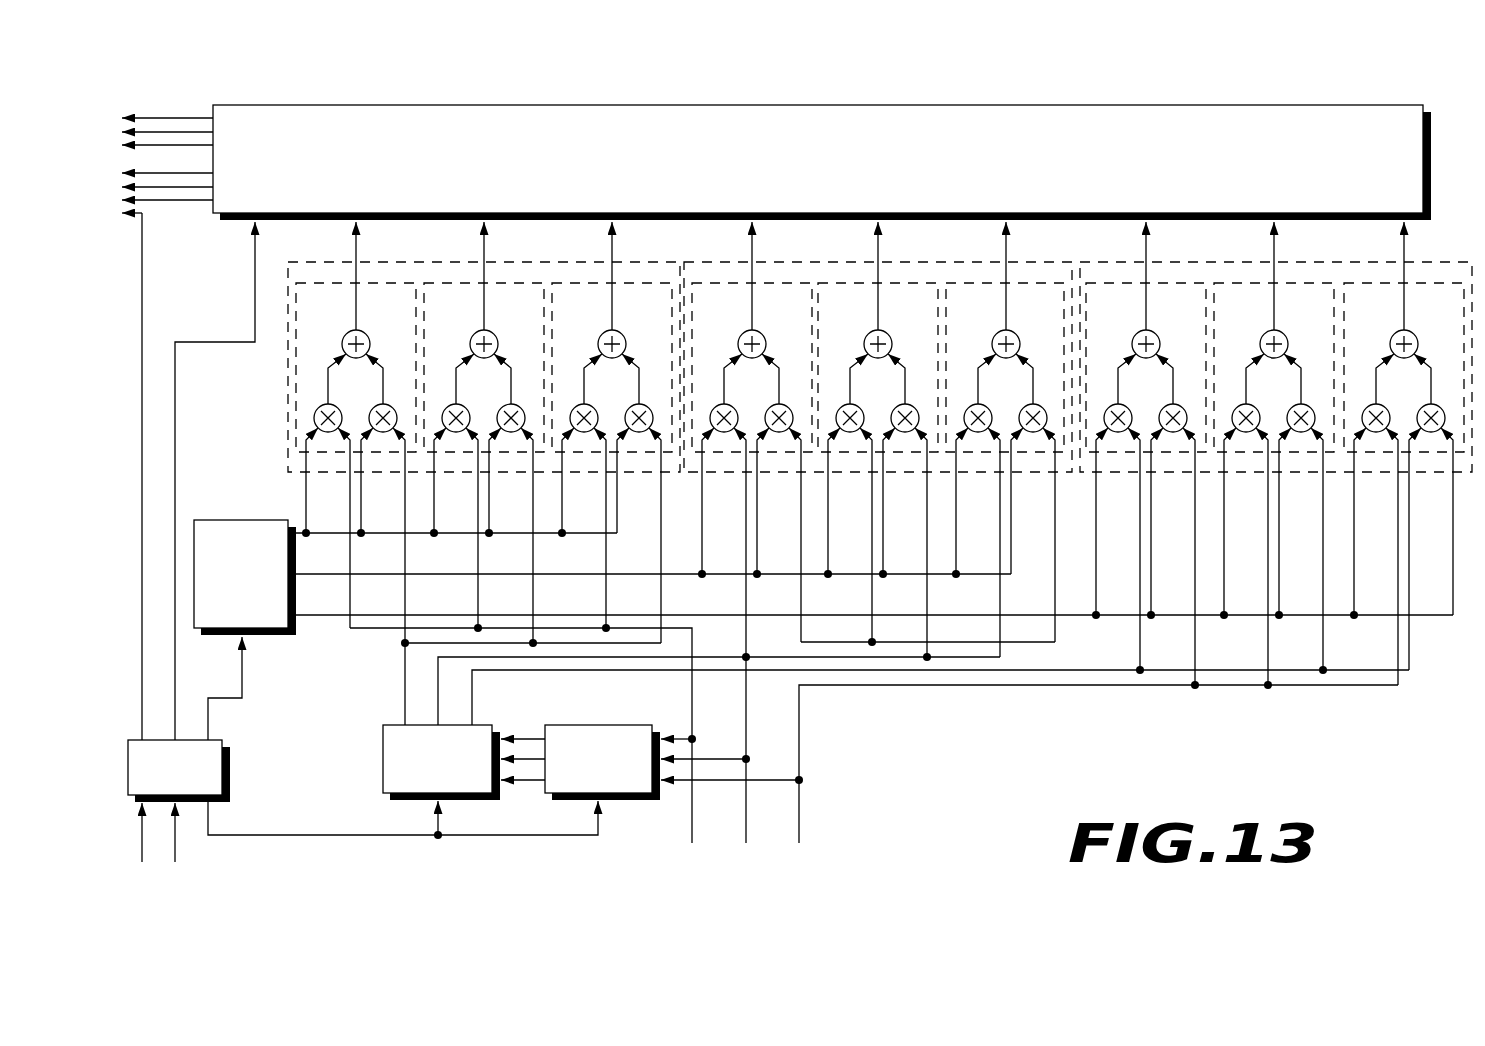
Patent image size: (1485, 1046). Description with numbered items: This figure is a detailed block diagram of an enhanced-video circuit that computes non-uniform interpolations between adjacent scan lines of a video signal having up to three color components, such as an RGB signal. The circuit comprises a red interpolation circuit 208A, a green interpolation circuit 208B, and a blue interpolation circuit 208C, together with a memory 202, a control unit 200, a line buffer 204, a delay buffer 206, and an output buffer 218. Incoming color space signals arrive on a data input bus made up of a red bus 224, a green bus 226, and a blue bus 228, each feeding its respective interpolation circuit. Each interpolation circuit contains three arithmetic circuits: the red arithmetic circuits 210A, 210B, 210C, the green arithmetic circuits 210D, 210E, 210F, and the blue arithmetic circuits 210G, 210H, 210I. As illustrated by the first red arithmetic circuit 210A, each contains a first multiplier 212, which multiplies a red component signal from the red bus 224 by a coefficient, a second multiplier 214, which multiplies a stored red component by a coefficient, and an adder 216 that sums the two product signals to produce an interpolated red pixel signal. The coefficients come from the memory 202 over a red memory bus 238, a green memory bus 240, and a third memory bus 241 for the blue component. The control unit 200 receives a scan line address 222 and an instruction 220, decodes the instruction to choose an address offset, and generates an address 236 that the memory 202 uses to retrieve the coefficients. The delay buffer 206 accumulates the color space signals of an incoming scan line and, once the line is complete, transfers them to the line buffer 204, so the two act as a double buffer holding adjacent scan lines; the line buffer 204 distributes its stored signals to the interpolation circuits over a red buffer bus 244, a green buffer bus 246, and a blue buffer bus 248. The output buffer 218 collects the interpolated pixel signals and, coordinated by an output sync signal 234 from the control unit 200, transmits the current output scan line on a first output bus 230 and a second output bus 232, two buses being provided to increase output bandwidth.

The control unit 200 is at (227, 770).
The memory 202 is at (241, 520).
The line buffer 204 is at (383, 768).
The delay buffer 206 is at (598, 724).
The red interpolation circuit 208A is at (514, 264).
The green interpolation circuit 208B is at (906, 264).
The blue interpolation circuit 208C is at (1299, 264).
The first red arithmetic circuit 210A is at (350, 312).
The red arithmetic circuit 210B is at (478, 312).
The red arithmetic circuit 210C is at (606, 312).
The green arithmetic circuit 210D is at (746, 312).
The green arithmetic circuit 210E is at (872, 312).
The green arithmetic circuit 210F is at (1000, 312).
The blue arithmetic circuit 210G is at (1142, 312).
The blue arithmetic circuit 210H is at (1270, 312).
The blue arithmetic circuit 210I is at (1396, 312).
The first multiplier 212 is at (317, 410).
The second multiplier 214 is at (371, 410).
The adder 216 is at (362, 332).
The output buffer 218 is at (481, 104).
The instruction 220 is at (144, 855).
The scan line address 222 is at (178, 848).
The red bus 224 is at (690, 826).
The green bus 226 is at (749, 826).
The blue bus 228 is at (801, 827).
The first output bus 230 is at (171, 216).
The second output bus 232 is at (170, 107).
The output sync signal 234 is at (143, 328).
The address 236 is at (243, 700).
The red memory bus 238 is at (328, 536).
The green memory bus 240 is at (328, 577).
The coefficient line 241 is at (328, 619).
The red buffer bus 244 is at (403, 673).
The green buffer bus 246 is at (437, 695).
The blue buffer bus 248 is at (474, 697).